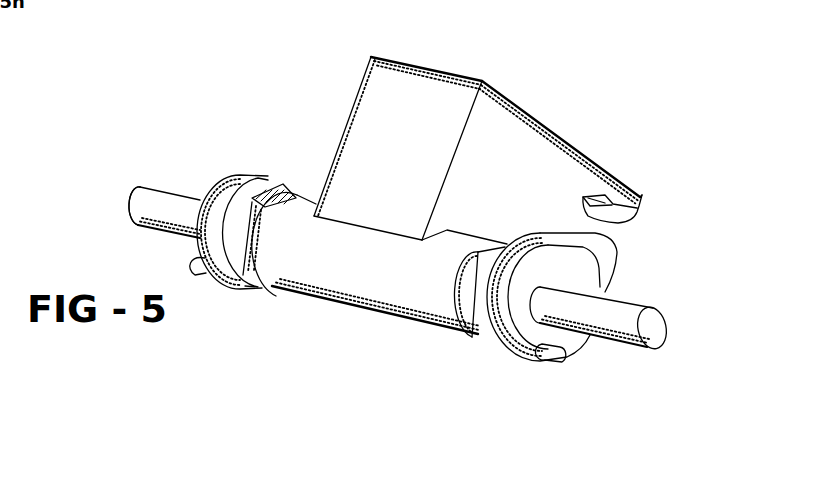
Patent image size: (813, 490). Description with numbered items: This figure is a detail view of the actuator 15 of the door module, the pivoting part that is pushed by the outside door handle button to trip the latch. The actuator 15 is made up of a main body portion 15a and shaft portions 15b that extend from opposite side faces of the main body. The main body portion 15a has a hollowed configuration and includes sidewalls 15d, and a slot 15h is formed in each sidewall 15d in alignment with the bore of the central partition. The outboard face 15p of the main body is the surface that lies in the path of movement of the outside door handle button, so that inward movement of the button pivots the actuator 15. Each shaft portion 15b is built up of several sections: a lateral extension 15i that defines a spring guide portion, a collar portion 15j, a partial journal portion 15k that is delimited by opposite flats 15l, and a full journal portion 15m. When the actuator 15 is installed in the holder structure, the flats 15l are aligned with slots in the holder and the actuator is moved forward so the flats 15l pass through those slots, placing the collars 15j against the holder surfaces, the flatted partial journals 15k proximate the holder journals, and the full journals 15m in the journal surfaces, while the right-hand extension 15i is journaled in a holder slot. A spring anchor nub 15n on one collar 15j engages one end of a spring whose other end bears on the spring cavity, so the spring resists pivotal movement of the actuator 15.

The actuator 15 is at (454, 79).
The main body portion 15a is at (347, 97).
The shaft portions 15b is at (125, 225).
The sidewalls 15d is at (538, 165).
The slot 15h is at (612, 221).
The lateral extension 15i is at (160, 185).
The collar portion 15j is at (230, 197).
The partial journal portion 15k is at (288, 196).
The flats 15l is at (231, 291).
The full journal portion 15m is at (306, 196).
The spring anchor nub 15n is at (558, 363).
The outboard face 15p is at (415, 165).